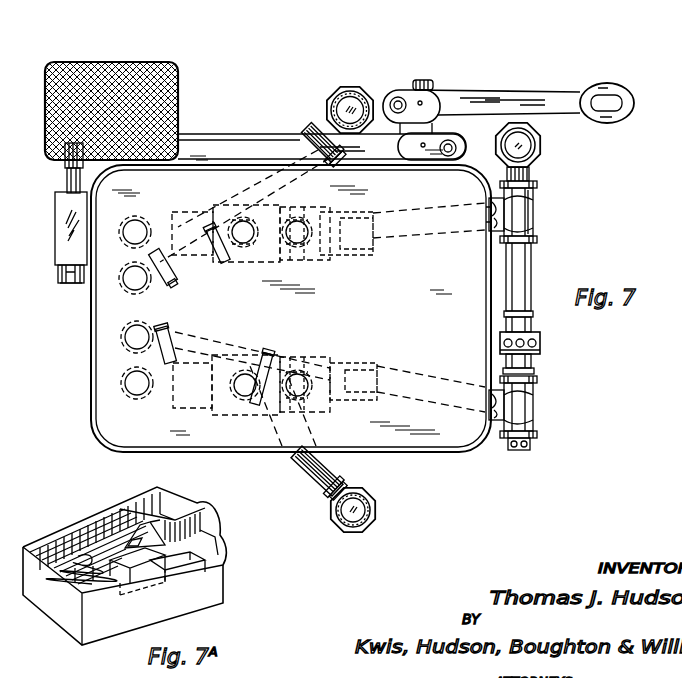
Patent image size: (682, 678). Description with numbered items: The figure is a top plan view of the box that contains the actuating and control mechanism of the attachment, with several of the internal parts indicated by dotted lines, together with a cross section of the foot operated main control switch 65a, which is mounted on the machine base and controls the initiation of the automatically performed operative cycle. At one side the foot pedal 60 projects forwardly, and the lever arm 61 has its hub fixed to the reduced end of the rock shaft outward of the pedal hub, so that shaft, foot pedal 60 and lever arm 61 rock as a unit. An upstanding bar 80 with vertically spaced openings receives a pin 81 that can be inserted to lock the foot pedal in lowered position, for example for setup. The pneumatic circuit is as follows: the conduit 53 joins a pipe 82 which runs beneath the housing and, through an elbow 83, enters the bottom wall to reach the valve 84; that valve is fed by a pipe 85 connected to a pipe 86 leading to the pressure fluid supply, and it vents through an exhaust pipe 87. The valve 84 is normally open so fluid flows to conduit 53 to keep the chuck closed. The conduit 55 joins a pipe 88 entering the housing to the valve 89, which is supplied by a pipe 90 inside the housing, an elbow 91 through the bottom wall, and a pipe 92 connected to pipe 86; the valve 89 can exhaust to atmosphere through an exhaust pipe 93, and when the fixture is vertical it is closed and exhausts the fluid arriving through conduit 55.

In FIG. 7, the conduit 53 is at (366, 100).
In FIG. 7, the conduit 55 is at (372, 494).
In FIG. 7, the foot pedal 60 is at (262, 138).
In FIG. 7, the lever arm 61 is at (547, 98).
In FIG. 7A, the foot operated main control switch 65a is at (54, 527).
In FIG. 7, the upstanding bar 80 is at (68, 241).
In FIG. 7, the pin 81 is at (66, 182).
In FIG. 7, the pipe 82 is at (325, 128).
In FIG. 7, the elbow 83 is at (132, 294).
In FIG. 7, the valve 84 is at (290, 209).
In FIG. 7, the pipe 85 is at (430, 212).
In FIG. 7, the pipe 86 is at (530, 264).
In FIG. 7, the exhaust pipe 87 is at (174, 215).
In FIG. 7, the pipe 88 is at (298, 467).
In FIG. 7, the valve 89 is at (246, 412).
In FIG. 7, the pipe 90 is at (240, 338).
In FIG. 7, the elbow 91 is at (158, 334).
In FIG. 7, the pipe 92 is at (418, 378).
In FIG. 7, the exhaust pipe 93 is at (156, 392).